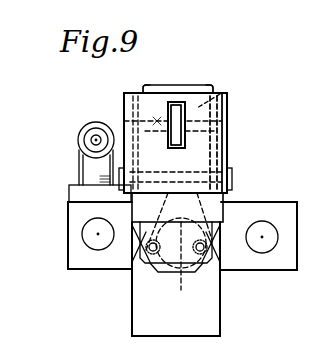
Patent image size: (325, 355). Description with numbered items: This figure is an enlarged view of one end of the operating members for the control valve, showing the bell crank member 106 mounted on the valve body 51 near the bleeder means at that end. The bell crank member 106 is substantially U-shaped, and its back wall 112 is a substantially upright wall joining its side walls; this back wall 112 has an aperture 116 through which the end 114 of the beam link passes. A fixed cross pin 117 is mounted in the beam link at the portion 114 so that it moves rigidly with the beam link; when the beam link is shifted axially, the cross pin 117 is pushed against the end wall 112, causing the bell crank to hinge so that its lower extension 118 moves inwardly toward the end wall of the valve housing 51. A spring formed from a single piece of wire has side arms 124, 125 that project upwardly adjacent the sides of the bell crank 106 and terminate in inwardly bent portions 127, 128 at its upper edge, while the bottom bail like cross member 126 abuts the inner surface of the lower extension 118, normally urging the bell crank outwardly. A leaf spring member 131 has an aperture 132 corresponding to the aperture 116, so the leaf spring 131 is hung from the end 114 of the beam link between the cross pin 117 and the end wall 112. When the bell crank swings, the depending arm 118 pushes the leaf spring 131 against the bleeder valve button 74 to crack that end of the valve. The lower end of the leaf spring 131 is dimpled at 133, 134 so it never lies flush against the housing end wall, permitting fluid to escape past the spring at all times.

The valve body 51 is at (68, 270).
The bleeder valve button 74 is at (176, 279).
The bell crank member 106 is at (183, 207).
The back wall 112 is at (222, 146).
The beam link end 114 is at (187, 121).
The aperture 116 is at (168, 132).
The cross pin 117 is at (157, 121).
The lower extension of the bell crank 118 is at (222, 200).
The spring side arm 124 is at (124, 115).
The spring side arm 125 is at (222, 127).
The bail cross member 126 is at (175, 143).
The inwardly bent portion 127 is at (146, 90).
The inwardly bent portion 128 is at (230, 92).
The leaf spring member 131 is at (130, 208).
The aperture 132 is at (213, 90).
The dimple 133 is at (150, 256).
The dimple 134 is at (207, 256).